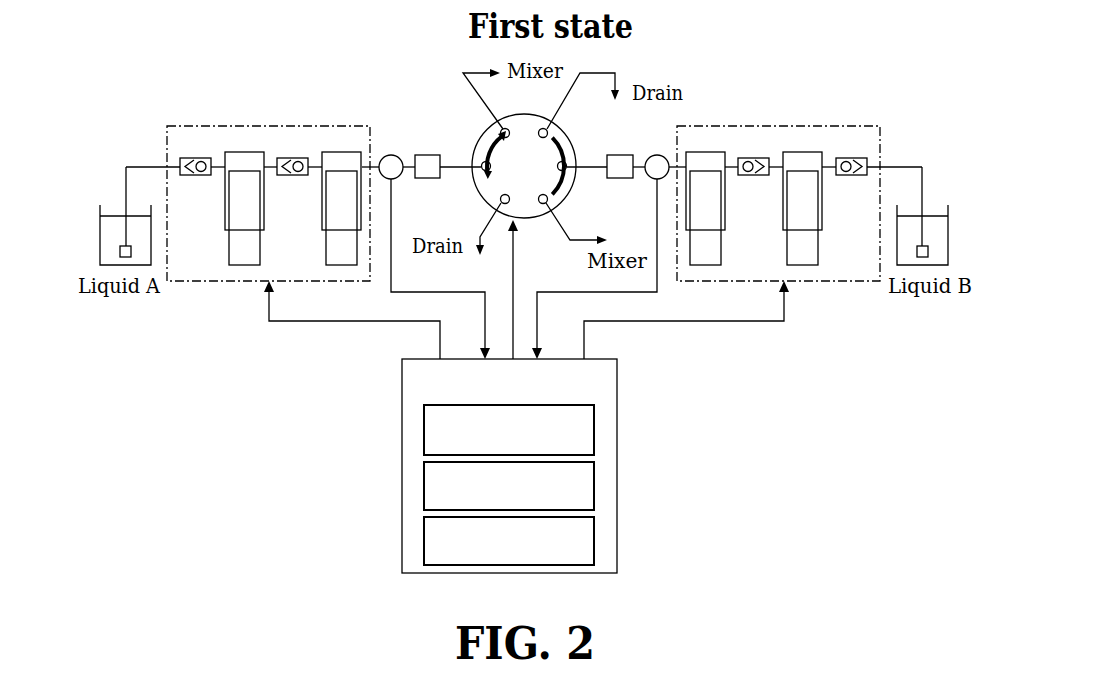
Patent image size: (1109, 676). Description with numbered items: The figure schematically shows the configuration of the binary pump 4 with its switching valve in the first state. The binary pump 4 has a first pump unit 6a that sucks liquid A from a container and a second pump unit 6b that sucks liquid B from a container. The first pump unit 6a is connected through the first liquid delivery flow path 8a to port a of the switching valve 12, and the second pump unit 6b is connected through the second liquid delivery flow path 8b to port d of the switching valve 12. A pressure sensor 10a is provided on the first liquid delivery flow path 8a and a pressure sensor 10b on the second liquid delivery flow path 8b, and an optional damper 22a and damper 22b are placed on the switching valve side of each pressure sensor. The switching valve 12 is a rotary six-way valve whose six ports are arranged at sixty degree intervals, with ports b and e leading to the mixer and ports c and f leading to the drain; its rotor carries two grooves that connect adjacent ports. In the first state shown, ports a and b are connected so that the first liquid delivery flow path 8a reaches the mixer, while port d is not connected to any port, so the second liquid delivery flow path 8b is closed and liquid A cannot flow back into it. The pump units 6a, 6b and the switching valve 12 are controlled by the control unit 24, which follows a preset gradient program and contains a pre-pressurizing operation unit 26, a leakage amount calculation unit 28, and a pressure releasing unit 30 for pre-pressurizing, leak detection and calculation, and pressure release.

The binary pump 4 is at (742, 73).
The first pump unit 6a is at (279, 125).
The second pump unit 6b is at (787, 125).
The first liquid delivery flow path 8a is at (452, 168).
The second liquid delivery flow path 8b is at (593, 170).
The pressure sensor 10a is at (391, 154).
The pressure sensor 10b is at (657, 154).
The switching valve 12 is at (533, 218).
The damper 22a is at (437, 155).
The damper 22b is at (620, 155).
The control unit 24 is at (617, 365).
The pre-pressurizing operation unit 26 is at (594, 422).
The leakage amount calculation unit 28 is at (594, 480).
The pressure releasing unit 30 is at (594, 533).